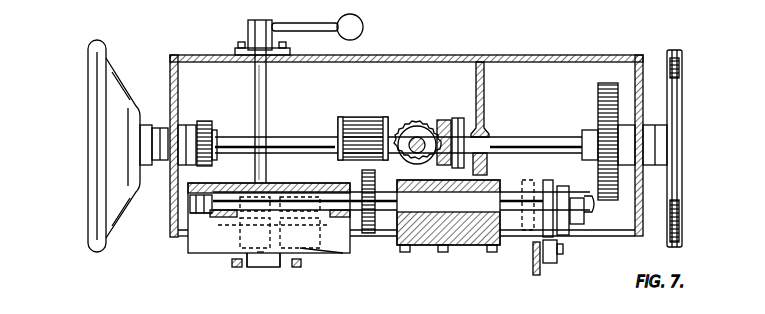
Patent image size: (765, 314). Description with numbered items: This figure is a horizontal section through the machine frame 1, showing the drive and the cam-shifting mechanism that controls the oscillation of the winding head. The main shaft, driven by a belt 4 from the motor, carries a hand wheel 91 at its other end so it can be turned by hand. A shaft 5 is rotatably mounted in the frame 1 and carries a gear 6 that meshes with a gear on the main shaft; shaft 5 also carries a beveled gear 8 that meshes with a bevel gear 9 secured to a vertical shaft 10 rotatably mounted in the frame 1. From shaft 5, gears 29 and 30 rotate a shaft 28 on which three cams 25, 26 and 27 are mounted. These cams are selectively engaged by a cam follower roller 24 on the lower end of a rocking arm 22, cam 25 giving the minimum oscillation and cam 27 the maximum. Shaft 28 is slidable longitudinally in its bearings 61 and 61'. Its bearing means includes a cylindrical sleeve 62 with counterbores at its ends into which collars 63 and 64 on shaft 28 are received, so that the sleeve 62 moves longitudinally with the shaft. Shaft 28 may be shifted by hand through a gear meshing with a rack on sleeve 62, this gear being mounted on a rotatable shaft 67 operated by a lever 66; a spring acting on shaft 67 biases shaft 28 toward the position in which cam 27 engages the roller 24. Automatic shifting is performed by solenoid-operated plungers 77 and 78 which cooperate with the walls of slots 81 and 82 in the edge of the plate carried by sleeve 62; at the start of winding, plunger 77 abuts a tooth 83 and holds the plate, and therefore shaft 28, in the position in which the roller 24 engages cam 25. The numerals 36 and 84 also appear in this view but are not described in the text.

The frame 1 is at (536, 58).
The belt 4 is at (682, 160).
The shaft 5 is at (528, 138).
The gear 6 is at (600, 103).
The beveled gear 8 is at (459, 120).
The bevel gear 9 is at (414, 126).
The vertical shaft 10 is at (440, 118).
The rocking arm 22 is at (542, 272).
The cam follower roller 24 is at (560, 263).
The cam 25 is at (548, 184).
The cam 26 is at (564, 186).
The cam 27 is at (578, 220).
The shaft 28 is at (510, 192).
The gear 29 is at (376, 117).
The gear 30 is at (382, 228).
The base 36 is at (392, 305).
The bearing 61 is at (269, 212).
The bearing 61' is at (448, 233).
The cylindrical sleeve 62 is at (222, 215).
The collar 63 is at (209, 188).
The collar 64 is at (368, 233).
The lever 66 is at (325, 14).
The rotatable shaft 67 is at (268, 100).
The plunger 77 is at (230, 267).
The plunger 78 is at (300, 266).
The slot 81 is at (250, 268).
The slot 82 is at (284, 268).
The tooth 83 is at (275, 268).
The bracket 84 is at (343, 255).
The hand wheel 91 is at (92, 158).